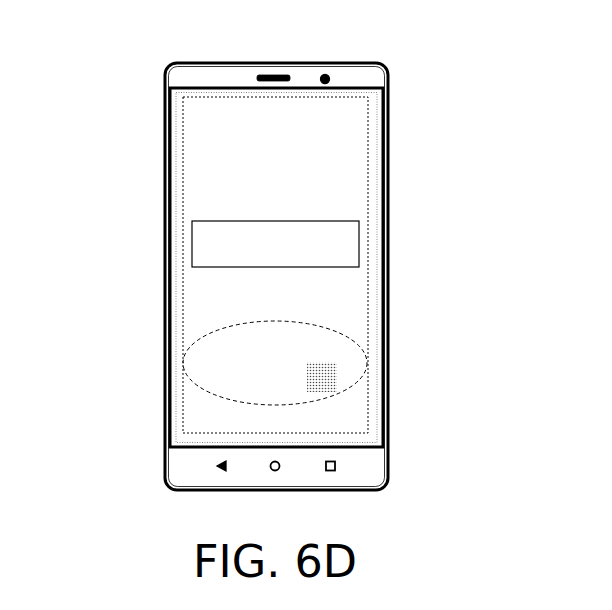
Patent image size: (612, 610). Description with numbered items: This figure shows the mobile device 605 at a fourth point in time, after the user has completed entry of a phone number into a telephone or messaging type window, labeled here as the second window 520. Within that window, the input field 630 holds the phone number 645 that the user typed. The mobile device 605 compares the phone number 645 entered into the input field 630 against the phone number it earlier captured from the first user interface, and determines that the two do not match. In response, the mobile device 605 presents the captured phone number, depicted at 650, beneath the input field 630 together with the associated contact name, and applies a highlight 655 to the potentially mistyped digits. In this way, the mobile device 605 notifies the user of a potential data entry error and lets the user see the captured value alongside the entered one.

The mobile device 605 is at (399, 82).
The second window 520 is at (275, 265).
The input field 630 is at (191, 253).
The phone number 645 is at (342, 240).
The presented captured phone number 650 is at (191, 363).
The highlight 655 is at (338, 389).